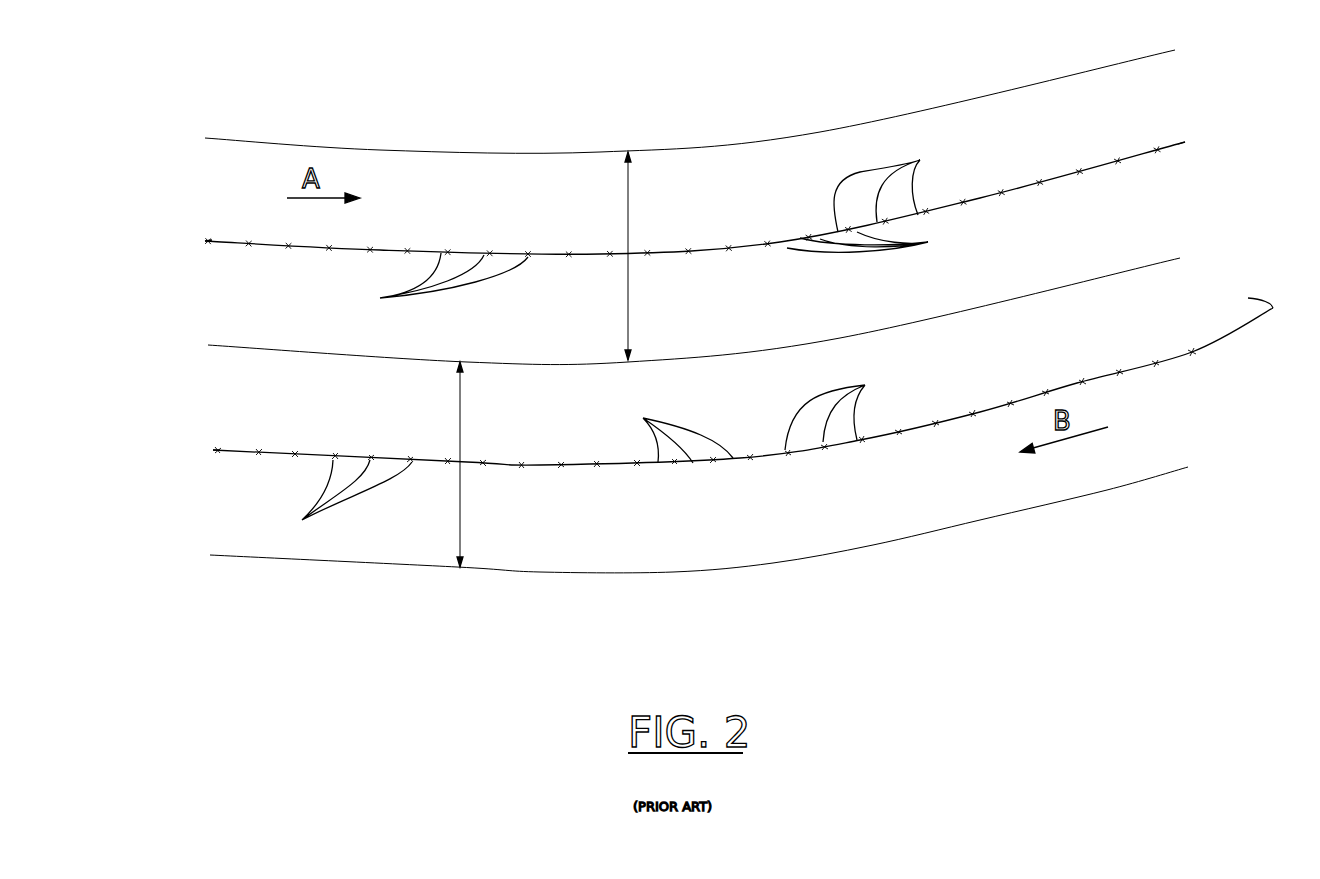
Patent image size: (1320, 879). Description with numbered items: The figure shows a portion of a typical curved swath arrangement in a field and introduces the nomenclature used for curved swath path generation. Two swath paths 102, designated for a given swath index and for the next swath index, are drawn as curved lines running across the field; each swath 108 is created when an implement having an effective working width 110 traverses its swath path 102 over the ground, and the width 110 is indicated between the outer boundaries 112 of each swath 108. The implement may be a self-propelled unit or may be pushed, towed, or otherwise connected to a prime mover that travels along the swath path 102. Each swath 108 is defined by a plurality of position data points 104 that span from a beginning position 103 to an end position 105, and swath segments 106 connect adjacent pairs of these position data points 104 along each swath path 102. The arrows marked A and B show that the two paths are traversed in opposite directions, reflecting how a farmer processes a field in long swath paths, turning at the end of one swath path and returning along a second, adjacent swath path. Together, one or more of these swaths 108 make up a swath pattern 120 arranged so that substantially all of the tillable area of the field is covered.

The swath path 102 is at (275, 257).
The beginning position 103 is at (213, 240).
The position data points 104 is at (380, 298).
The end position 105 is at (1182, 137).
The swath segments 106 is at (920, 160).
The swath 108 is at (452, 140).
The effective working width 110 is at (628, 213).
The channel boundary 112 is at (972, 100).
The swath pattern 120 is at (388, 680).